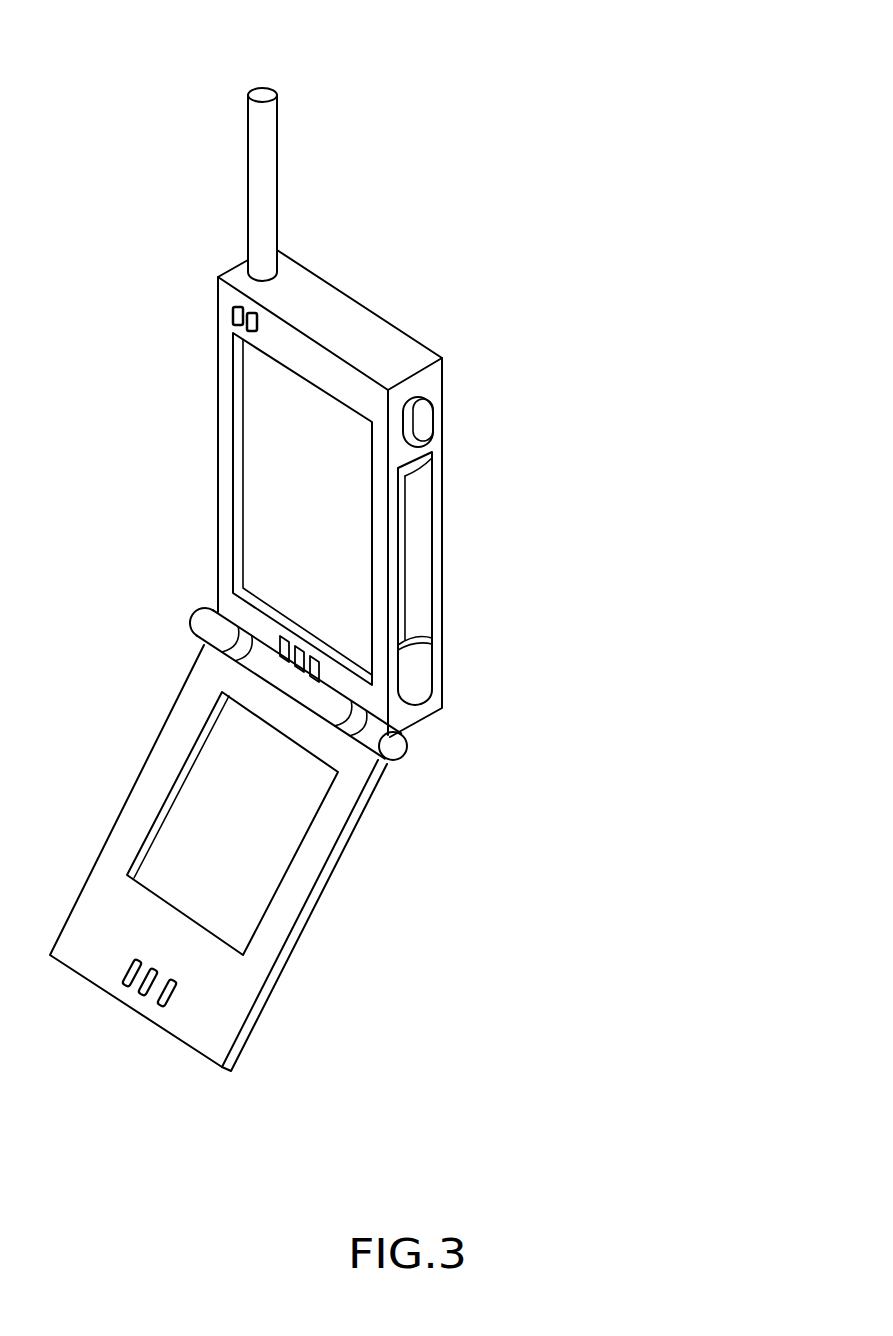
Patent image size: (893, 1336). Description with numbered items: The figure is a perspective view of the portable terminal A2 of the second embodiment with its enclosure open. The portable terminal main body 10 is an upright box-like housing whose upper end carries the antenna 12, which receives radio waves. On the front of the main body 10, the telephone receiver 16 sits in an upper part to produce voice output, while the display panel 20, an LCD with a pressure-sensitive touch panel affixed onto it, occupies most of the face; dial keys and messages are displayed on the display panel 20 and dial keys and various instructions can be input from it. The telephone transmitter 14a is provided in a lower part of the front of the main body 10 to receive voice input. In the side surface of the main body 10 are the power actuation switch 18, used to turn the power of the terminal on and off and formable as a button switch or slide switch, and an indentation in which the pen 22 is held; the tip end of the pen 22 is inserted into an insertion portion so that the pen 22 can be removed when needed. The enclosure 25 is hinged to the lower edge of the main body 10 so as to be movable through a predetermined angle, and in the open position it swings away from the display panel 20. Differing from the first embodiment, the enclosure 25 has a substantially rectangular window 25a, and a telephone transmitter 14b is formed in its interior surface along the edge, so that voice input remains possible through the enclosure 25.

The portable terminal A2 is at (421, 78).
The portable terminal main body 10 is at (362, 317).
The antenna 12 is at (272, 132).
The telephone transmitter 14a is at (268, 650).
The telephone transmitter 14b is at (145, 1000).
The telephone receiver 16 is at (233, 313).
The power actuation switch 18 is at (434, 418).
The display panel 20 is at (340, 601).
The pen 22 is at (423, 528).
The enclosure 25 is at (230, 993).
The window 25a is at (285, 808).